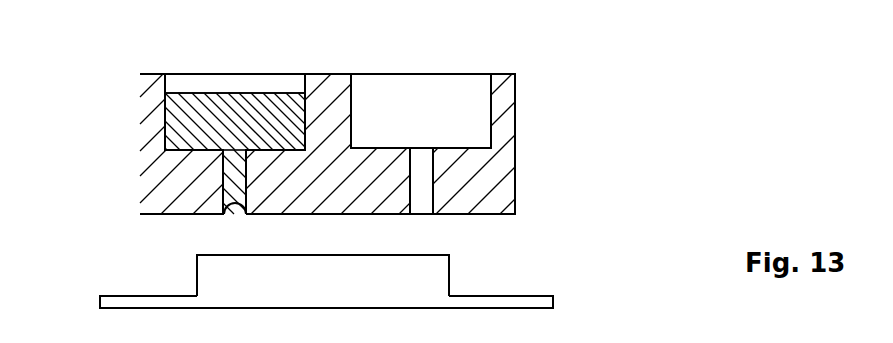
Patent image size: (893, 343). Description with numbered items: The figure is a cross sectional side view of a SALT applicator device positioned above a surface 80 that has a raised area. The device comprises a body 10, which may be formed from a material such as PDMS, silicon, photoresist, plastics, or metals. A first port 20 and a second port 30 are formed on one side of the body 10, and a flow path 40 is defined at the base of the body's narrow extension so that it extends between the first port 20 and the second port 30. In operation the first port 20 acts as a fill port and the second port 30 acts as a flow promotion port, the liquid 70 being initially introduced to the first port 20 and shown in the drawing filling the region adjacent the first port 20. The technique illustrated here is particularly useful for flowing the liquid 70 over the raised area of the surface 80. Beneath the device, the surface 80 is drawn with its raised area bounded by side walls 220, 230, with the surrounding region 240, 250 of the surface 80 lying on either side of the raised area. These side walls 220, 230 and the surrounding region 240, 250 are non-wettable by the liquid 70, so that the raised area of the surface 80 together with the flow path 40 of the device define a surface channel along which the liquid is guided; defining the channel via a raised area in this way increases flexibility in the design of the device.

The body 10 is at (332, 82).
The first port 20 is at (230, 82).
The second port 30 is at (434, 80).
The flow path 40 is at (311, 214).
The liquid 70 is at (168, 127).
The surface 80 is at (395, 253).
The side wall 220 is at (197, 275).
The side wall 230 is at (452, 272).
The surrounding region 240 is at (116, 297).
The surrounding region 250 is at (538, 292).